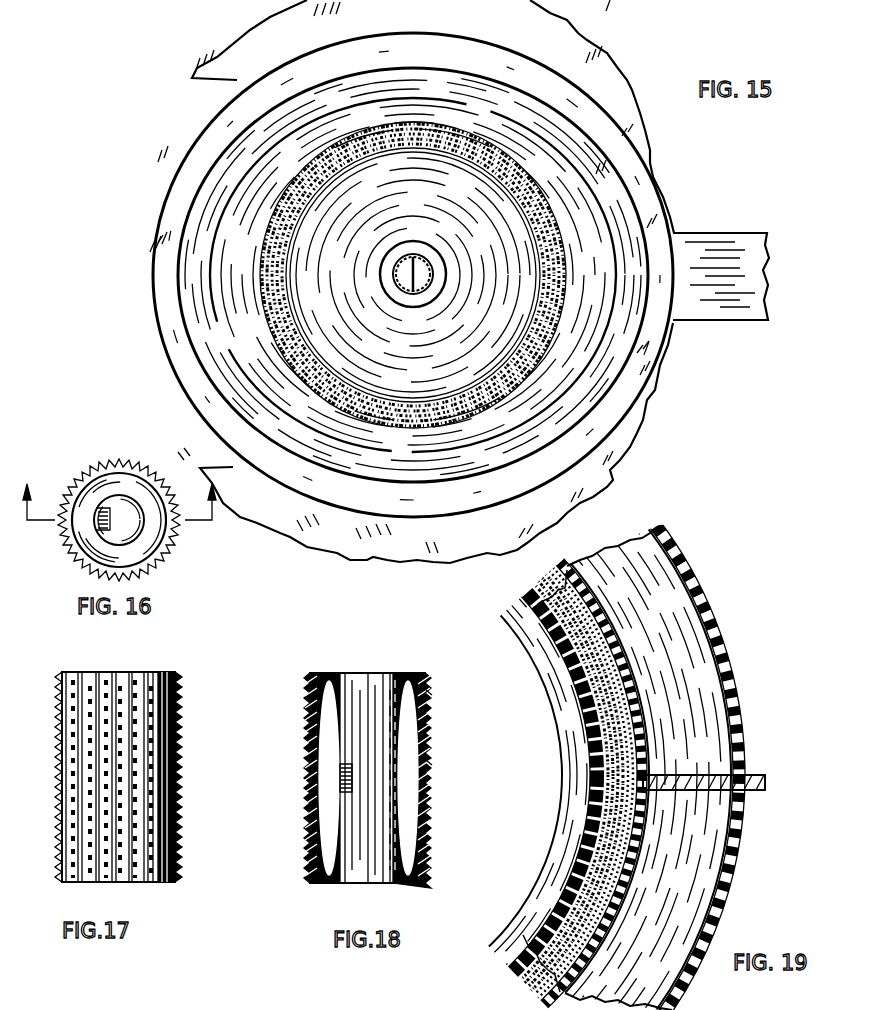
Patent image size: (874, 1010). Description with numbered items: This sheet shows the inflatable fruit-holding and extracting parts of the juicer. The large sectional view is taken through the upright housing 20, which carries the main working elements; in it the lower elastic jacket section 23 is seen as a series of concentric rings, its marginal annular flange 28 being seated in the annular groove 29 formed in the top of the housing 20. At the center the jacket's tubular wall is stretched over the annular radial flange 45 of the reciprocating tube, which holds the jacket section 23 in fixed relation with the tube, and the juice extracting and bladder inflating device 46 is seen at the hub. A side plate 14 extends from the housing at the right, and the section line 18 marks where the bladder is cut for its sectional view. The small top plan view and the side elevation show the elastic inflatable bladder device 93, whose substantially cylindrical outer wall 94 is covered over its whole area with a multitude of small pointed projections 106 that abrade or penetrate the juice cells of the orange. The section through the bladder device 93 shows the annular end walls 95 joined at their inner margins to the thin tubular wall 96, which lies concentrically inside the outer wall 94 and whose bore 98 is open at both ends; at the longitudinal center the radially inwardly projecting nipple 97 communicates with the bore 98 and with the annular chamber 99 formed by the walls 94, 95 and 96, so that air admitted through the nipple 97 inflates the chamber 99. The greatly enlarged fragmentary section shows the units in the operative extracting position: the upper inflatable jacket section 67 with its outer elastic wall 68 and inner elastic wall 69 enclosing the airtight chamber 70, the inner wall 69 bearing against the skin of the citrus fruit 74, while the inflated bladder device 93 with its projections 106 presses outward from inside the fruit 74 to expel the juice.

In FIG. 15, the mounting plate 14 is at (716, 232).
In FIG. 15, the housing 20 is at (668, 356).
In FIG. 15, the jacket section 23 is at (392, 110).
In FIG. 19, the jacket section 23 is at (722, 918).
In FIG. 15, the annular flange 28 is at (402, 507).
In FIG. 15, the annular groove 29 is at (195, 373).
In FIG. 15, the annular radial flange 45 is at (416, 269).
In FIG. 15, the juice extracting and bladder inflating device 46 is at (413, 264).
In FIG. 16, the section line 18- 18 is at (121, 518).
In FIG. 19, the inflatable jacket section 67 is at (728, 668).
In FIG. 19, the upper elastic wall 68 is at (703, 590).
In FIG. 19, the lower elastic wall 69 is at (618, 655).
In FIG. 19, the airtight chamber 70 is at (656, 570).
In FIG. 19, the citrus fruit 74 is at (548, 968).
In FIG. 17, the bladder device 93 is at (178, 752).
In FIG. 18, the bladder device 93 is at (432, 764).
In FIG. 19, the bladder device 93 is at (552, 700).
In FIG. 18, the outer wall 94 is at (428, 728).
In FIG. 18, the end walls 95 is at (412, 676).
In FIG. 18, the tubular wall 96 is at (387, 790).
In FIG. 16, the nipple 97 is at (105, 515).
In FIG. 18, the nipple 97 is at (350, 764).
In FIG. 18, the bore 98 is at (373, 690).
In FIG. 18, the annular chamber 99 is at (400, 812).
In FIG. 16, the pointed projections 106 is at (166, 472).
In FIG. 17, the pointed projections 106 is at (135, 688).
In FIG. 18, the pointed projections 106 is at (427, 810).
In FIG. 19, the pointed projections 106 is at (565, 925).